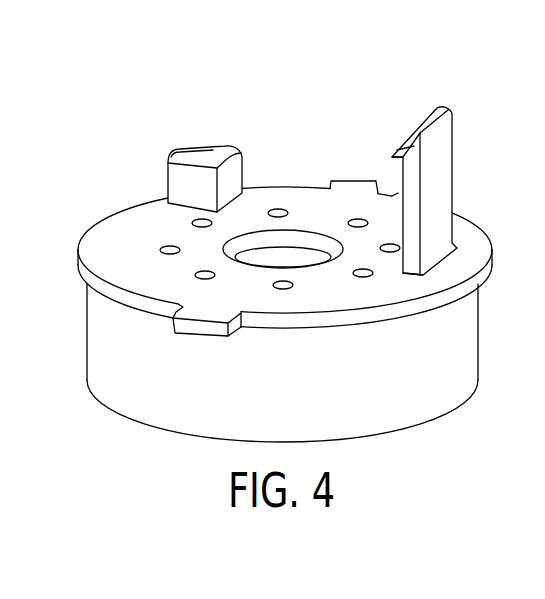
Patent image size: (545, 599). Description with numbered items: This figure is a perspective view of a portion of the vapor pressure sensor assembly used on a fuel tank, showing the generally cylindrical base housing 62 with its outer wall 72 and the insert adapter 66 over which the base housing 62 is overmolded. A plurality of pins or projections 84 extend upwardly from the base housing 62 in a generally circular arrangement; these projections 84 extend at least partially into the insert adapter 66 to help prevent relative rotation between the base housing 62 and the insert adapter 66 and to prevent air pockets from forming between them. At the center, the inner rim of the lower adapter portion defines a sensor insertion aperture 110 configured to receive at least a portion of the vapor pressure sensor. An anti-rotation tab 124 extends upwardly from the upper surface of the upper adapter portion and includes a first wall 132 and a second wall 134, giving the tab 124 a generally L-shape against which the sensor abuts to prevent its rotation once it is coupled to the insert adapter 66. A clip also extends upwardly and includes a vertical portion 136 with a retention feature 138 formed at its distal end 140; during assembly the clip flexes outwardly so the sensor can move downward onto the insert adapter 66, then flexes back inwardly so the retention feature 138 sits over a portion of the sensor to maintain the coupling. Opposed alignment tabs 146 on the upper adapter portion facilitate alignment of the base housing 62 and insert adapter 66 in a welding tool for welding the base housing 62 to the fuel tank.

The base housing 62 is at (87, 338).
The insert adapter 66 is at (92, 246).
The outer wall 72 is at (463, 338).
The projections 84 is at (280, 210).
The sensor insertion aperture 110 is at (287, 257).
The anti-rotation tab 124 is at (187, 139).
The first wall 132 is at (173, 185).
The second wall 134 is at (236, 165).
The vertical portion 136 is at (440, 192).
The retention feature 138 is at (391, 157).
The distal end 140 is at (434, 147).
The alignment tabs 146 is at (352, 183).